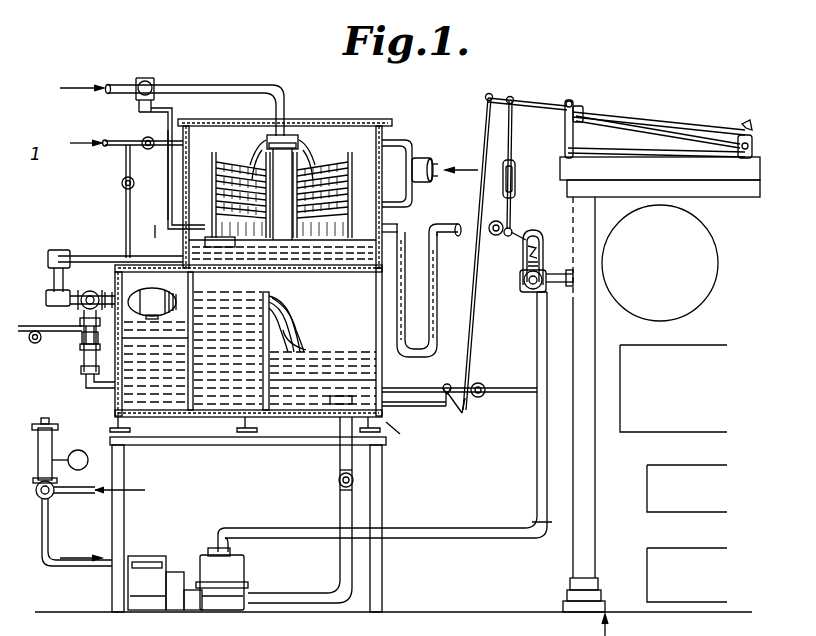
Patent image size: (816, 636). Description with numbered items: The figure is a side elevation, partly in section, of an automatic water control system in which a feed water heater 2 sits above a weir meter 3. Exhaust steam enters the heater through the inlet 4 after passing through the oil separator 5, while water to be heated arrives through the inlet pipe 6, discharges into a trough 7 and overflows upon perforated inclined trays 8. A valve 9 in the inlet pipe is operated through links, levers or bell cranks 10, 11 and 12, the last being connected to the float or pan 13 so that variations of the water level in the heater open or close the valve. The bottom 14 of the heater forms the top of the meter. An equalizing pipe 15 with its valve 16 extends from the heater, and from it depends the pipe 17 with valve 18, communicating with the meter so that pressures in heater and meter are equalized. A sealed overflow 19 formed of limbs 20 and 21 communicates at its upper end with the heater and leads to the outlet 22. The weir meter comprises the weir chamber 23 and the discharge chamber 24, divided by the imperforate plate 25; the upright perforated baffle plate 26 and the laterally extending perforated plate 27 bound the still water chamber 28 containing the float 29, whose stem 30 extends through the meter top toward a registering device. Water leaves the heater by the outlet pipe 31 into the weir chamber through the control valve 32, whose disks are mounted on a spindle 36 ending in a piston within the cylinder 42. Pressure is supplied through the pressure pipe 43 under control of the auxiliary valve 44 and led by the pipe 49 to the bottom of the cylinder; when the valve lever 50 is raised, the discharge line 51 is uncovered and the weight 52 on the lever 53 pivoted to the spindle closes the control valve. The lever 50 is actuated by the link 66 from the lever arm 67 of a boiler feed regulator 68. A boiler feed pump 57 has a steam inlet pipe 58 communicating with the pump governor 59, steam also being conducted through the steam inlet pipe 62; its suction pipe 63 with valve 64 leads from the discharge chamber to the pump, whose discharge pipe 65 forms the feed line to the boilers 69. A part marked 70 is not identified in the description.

The feed water heater 2 is at (388, 126).
The weir meter 3 is at (459, 378).
The inlet for exhaust steam 4 is at (424, 160).
The oil separator 5 is at (397, 173).
The inlet pipe 6 is at (122, 86).
The trough 7 is at (292, 135).
The perforated inclined plates or trays 8 is at (318, 170).
The valve 9 is at (148, 82).
The link, lever or bell crank 10 is at (173, 116).
The link, lever or bell crank 11 is at (167, 176).
The link, lever or bell crank 12 is at (205, 243).
The float or pan 13 is at (244, 232).
The bottom of the heater 14 is at (352, 272).
The equalizing pipe 15 is at (112, 141).
The valve 16 is at (146, 138).
The pipe 17 is at (125, 166).
The valve 18 is at (121, 185).
The sealed overflow 19 is at (433, 290).
The limb or member 20 is at (405, 300).
The limb or member 21 is at (432, 330).
The outlet 22 is at (445, 224).
The inlet or weir chamber 23 is at (195, 318).
The exit or discharge chamber 24 is at (248, 342).
The imperforate plate 25 is at (290, 322).
The upright perforated baffle plate 26 is at (265, 298).
The laterally extending perforated plate 27 is at (162, 338).
The still water or float chamber 28 is at (146, 294).
The float 29 is at (174, 290).
The stem 30 is at (155, 234).
The outlet pipe 31 is at (80, 256).
The control valve 32 is at (90, 298).
The spindle 36 is at (82, 338).
The cylinder or casing 42 is at (82, 357).
The pressure pipe 43 is at (496, 386).
The auxiliary valve 44 is at (446, 386).
The pipe 49 is at (86, 384).
The valve lever 50 is at (468, 410).
The discharge line 51 is at (440, 406).
The weight 52 is at (30, 343).
The lever 53 is at (48, 326).
The boiler feed pump 57 is at (218, 612).
The steam inlet pipe 58 is at (129, 496).
The pump governor 59 is at (46, 460).
The steam inlet pipe 62 is at (47, 548).
The suction pipe 63 is at (330, 598).
The valve 64 is at (338, 481).
The discharge pipe 65 is at (490, 522).
The link 66 is at (478, 262).
The lever arm 67 is at (545, 106).
The boiler feed regulator 68 is at (658, 129).
The boilers 69 is at (660, 263).
The pivot 70 is at (540, 290).